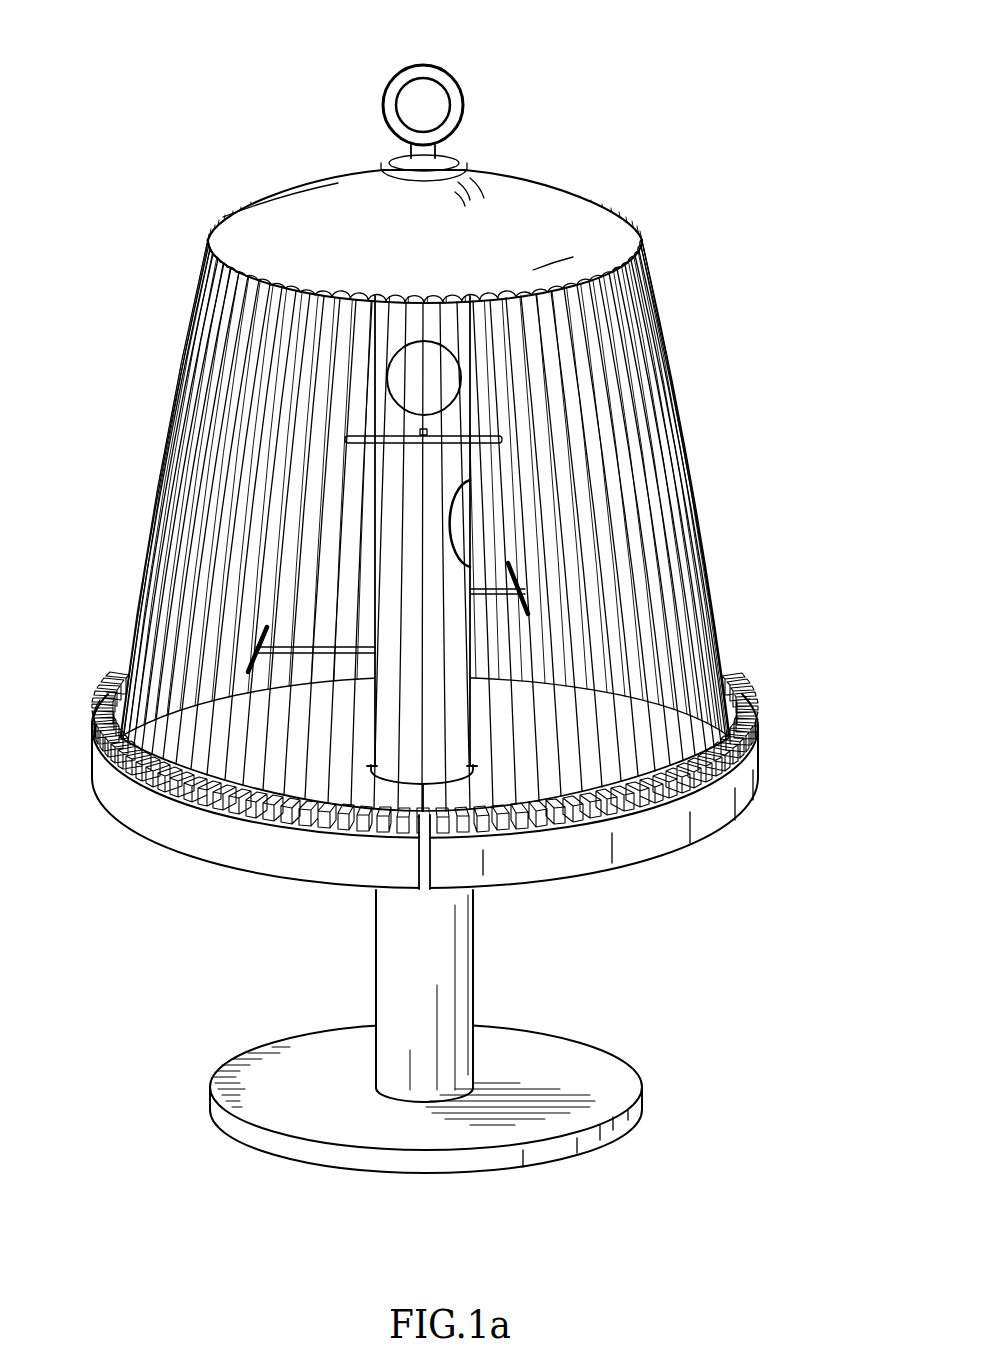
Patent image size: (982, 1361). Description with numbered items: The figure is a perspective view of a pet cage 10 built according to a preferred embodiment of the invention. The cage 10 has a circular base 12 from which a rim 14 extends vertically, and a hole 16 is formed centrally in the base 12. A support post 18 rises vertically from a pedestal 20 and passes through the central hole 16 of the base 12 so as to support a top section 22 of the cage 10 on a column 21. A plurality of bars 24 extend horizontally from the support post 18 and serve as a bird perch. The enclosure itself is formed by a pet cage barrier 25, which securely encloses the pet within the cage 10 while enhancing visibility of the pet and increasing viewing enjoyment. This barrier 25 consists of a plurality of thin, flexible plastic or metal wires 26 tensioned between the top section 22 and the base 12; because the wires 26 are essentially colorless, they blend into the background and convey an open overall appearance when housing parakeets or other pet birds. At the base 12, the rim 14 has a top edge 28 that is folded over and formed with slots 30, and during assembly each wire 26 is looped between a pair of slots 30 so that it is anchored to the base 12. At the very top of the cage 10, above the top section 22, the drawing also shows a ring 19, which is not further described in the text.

The pet cage 10 is at (205, 160).
The circular base 12 is at (595, 767).
The rim 14 is at (702, 823).
The hole 16 is at (392, 790).
The support post 18 is at (463, 987).
The hanging ring 19 is at (467, 120).
The pedestal 20 is at (558, 1070).
The column 21 is at (390, 580).
The top section 22 is at (568, 222).
The bars 24 is at (528, 597).
The pet cage barrier 25 is at (165, 455).
The wires 26 is at (625, 430).
The top edge 28 is at (110, 755).
The slots 30 is at (195, 800).